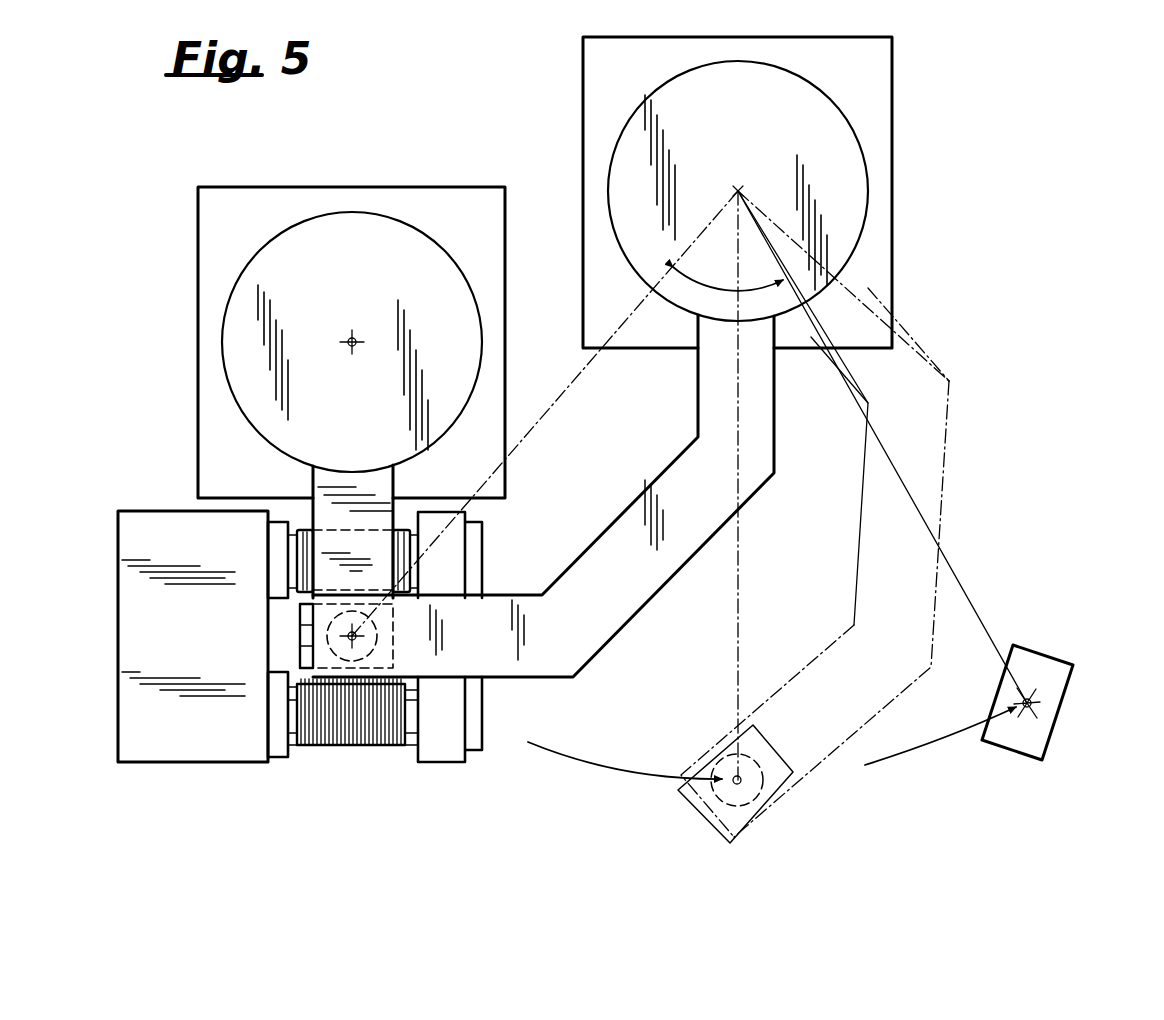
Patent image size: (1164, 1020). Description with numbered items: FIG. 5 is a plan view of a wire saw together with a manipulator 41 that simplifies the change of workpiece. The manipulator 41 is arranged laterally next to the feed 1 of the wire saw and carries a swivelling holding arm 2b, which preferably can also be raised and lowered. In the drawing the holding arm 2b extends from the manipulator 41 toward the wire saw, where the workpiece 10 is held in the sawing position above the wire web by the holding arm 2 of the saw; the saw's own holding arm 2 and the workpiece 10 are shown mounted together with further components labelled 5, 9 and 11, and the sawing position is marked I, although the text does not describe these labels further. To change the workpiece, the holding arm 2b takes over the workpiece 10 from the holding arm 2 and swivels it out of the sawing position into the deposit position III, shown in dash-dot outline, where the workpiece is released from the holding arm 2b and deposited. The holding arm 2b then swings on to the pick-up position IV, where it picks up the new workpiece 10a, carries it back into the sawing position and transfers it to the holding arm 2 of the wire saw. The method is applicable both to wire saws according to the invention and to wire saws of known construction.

The feed 1 is at (222, 258).
The holding arm 2 is at (330, 548).
The swivelling holding arm 2b is at (590, 634).
The drive housing 5 is at (297, 758).
The gear shaft 9 is at (405, 748).
The workpiece 10 is at (300, 634).
The new workpiece 10a is at (1012, 740).
The gear wheel 11 is at (322, 703).
The manipulator 41 is at (878, 95).
The pivot position I is at (347, 338).
The deposit position III is at (738, 786).
The pick-up position IV is at (1032, 703).